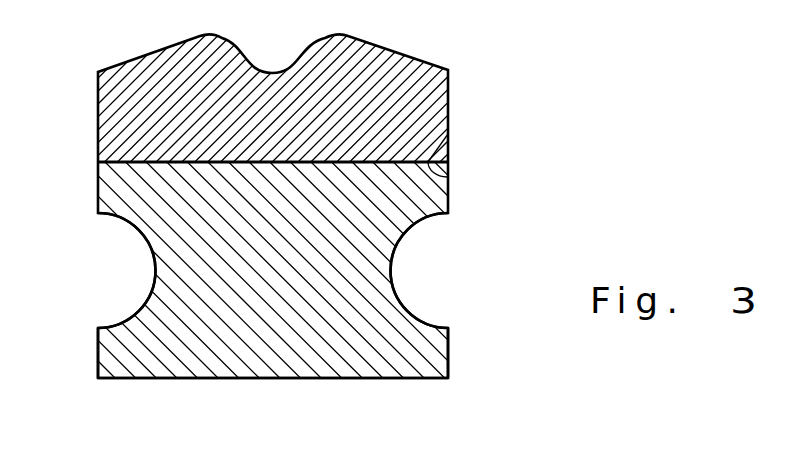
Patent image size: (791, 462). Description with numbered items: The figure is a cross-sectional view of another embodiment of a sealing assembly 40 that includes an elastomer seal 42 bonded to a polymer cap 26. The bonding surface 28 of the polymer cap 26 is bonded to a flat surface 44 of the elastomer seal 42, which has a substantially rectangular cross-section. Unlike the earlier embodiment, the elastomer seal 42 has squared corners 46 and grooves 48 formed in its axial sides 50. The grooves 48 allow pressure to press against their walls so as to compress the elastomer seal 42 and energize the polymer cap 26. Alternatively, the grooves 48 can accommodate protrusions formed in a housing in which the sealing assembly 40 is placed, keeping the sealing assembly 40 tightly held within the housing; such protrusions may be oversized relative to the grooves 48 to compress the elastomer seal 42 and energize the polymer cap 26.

The sealing assembly 40 is at (472, 56).
The polymer cap 26 is at (428, 100).
The bonding surface 28 is at (448, 134).
The flat surface 44 is at (449, 172).
The elastomer seal 42 is at (448, 195).
The grooves 48 is at (153, 273).
The axial sides 50 is at (98, 350).
The squared corners 46 is at (98, 378).